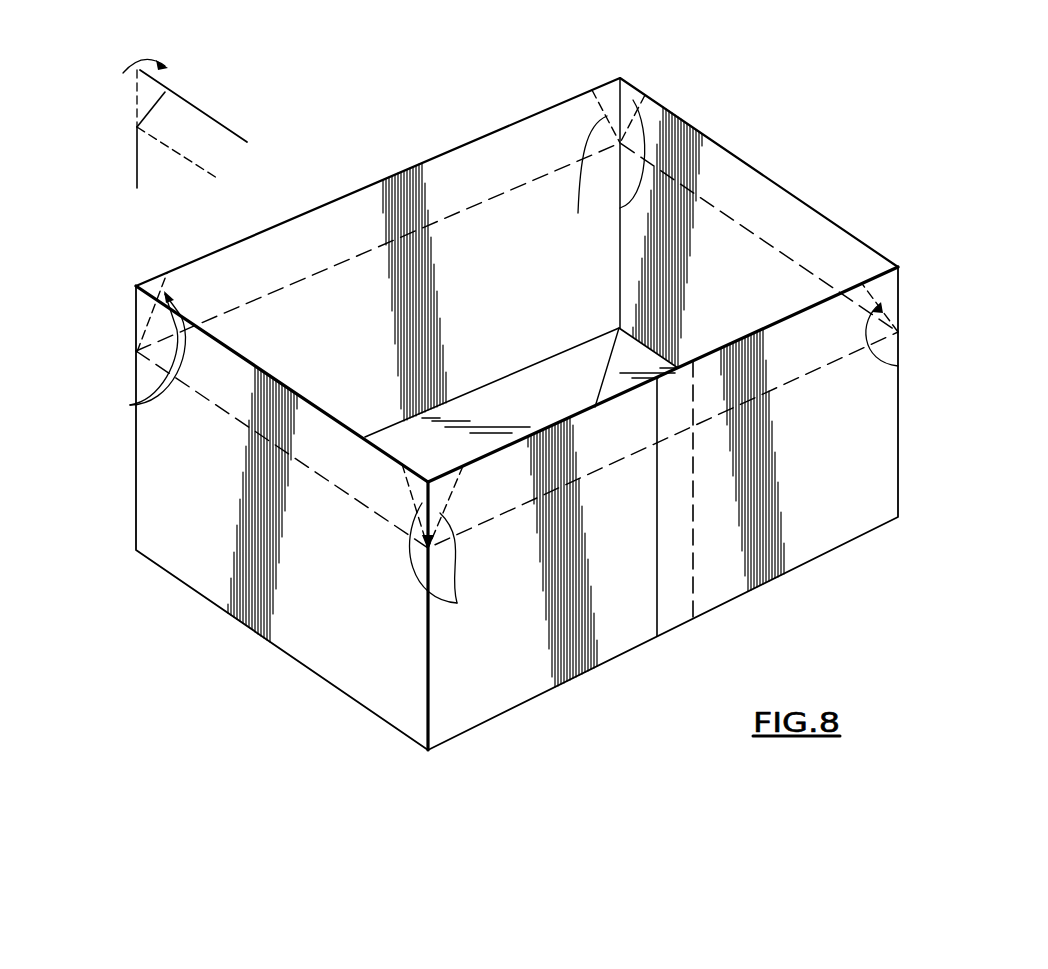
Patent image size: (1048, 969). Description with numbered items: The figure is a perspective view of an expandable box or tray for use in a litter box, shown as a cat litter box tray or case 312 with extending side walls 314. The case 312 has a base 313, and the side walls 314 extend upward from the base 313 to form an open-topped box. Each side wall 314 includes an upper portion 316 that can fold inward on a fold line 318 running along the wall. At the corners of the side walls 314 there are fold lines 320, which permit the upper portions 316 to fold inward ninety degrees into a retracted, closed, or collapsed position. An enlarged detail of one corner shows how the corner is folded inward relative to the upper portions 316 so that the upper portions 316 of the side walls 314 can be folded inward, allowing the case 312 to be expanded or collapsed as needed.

The case 312 is at (940, 220).
The base 313 is at (520, 388).
The side walls 314 is at (137, 163).
The upper portion 316 is at (213, 119).
The fold line 318 is at (207, 168).
The fold lines 320 is at (130, 405).